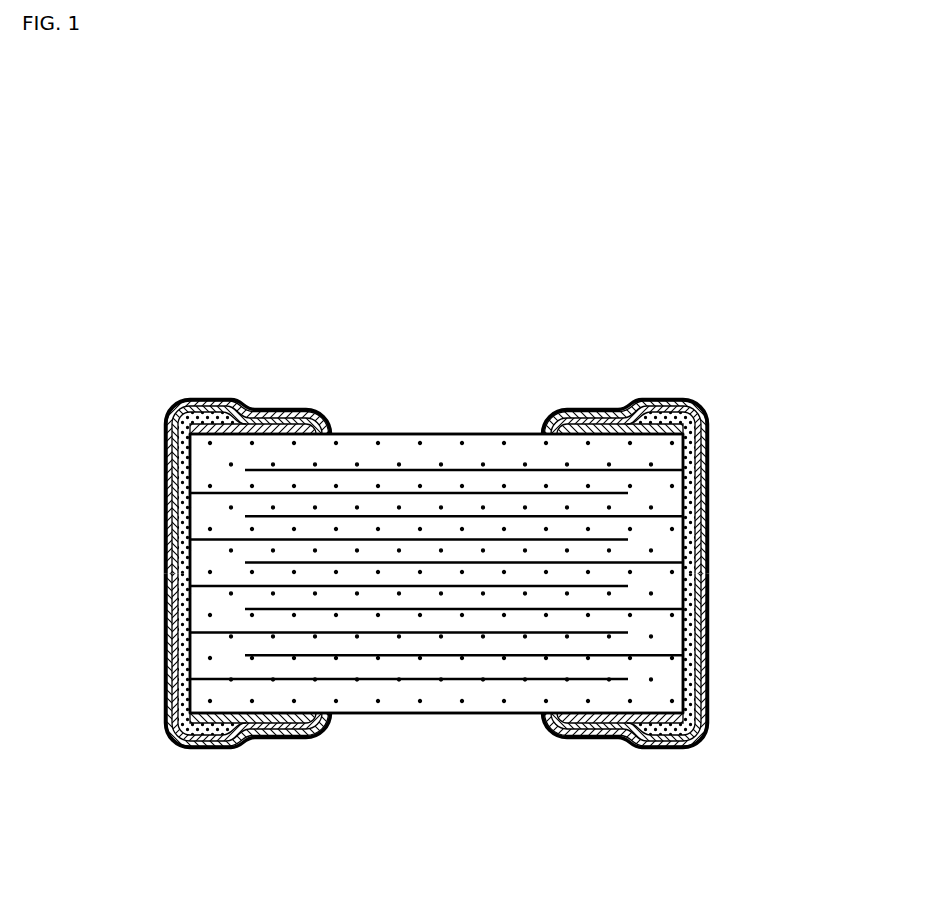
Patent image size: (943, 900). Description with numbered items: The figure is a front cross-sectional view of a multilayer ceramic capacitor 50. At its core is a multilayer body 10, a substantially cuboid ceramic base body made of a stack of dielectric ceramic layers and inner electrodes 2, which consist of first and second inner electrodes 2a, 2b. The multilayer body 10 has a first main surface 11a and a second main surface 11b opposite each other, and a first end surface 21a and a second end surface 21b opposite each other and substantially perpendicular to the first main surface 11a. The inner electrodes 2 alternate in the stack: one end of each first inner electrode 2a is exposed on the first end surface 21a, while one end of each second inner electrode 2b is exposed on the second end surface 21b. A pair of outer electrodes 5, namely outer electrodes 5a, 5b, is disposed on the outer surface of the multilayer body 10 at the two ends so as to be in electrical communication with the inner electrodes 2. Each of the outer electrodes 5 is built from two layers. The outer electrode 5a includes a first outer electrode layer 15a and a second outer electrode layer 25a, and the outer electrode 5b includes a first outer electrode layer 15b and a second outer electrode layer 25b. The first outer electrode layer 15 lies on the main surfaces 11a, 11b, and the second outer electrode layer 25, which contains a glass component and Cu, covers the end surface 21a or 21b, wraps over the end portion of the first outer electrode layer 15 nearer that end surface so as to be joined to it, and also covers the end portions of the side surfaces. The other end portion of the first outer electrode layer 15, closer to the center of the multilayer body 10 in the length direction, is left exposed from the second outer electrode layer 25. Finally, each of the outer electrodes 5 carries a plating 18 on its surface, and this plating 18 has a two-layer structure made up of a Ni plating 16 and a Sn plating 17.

The multilayer ceramic capacitor 50 is at (486, 263).
The multilayer body 10 is at (403, 412).
The first main surface 11a is at (352, 433).
The second main surface 11b is at (488, 716).
The first end surface 21a is at (190, 569).
The second end surface 21b is at (683, 577).
The inner electrodes 2 is at (436, 570).
The first inner electrode 2a is at (478, 538).
The second inner electrode 2b is at (405, 657).
The outer electrodes 5 is at (431, 573).
The outer electrode 5a is at (153, 523).
The outer electrode 5b is at (720, 523).
The first outer electrode layer 15 is at (426, 511).
The first outer electrode layer 15a is at (218, 427).
The first outer electrode layer 15b is at (660, 426).
The Ni plating 16 is at (565, 412).
The Sn plating 17 is at (591, 409).
The plating 18 is at (590, 307).
The second outer electrode layer 25 is at (429, 523).
The second outer electrode layer 25a is at (186, 398).
The second outer electrode layer 25b is at (690, 398).